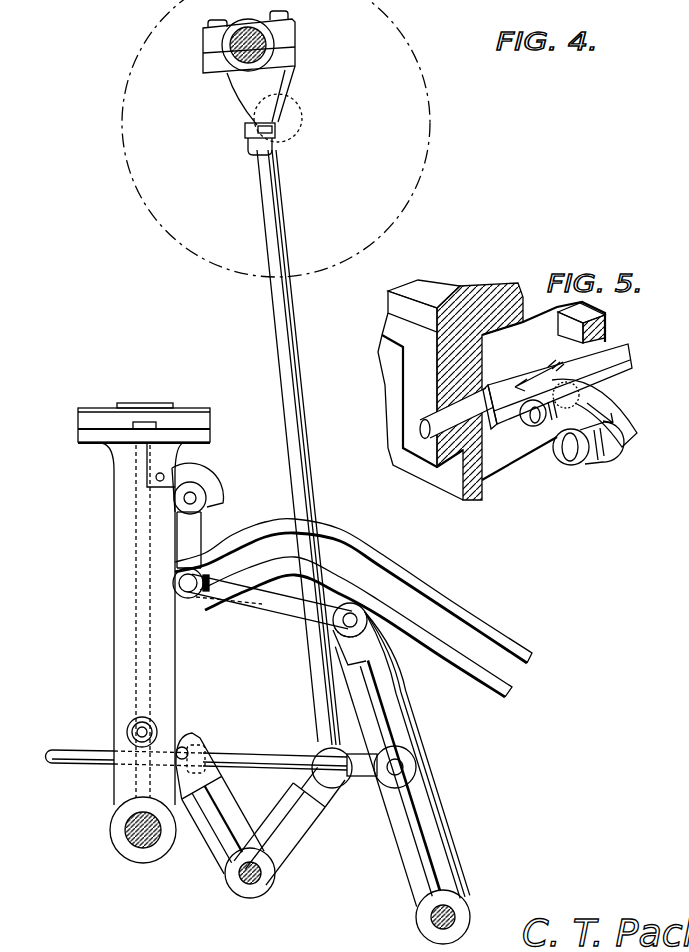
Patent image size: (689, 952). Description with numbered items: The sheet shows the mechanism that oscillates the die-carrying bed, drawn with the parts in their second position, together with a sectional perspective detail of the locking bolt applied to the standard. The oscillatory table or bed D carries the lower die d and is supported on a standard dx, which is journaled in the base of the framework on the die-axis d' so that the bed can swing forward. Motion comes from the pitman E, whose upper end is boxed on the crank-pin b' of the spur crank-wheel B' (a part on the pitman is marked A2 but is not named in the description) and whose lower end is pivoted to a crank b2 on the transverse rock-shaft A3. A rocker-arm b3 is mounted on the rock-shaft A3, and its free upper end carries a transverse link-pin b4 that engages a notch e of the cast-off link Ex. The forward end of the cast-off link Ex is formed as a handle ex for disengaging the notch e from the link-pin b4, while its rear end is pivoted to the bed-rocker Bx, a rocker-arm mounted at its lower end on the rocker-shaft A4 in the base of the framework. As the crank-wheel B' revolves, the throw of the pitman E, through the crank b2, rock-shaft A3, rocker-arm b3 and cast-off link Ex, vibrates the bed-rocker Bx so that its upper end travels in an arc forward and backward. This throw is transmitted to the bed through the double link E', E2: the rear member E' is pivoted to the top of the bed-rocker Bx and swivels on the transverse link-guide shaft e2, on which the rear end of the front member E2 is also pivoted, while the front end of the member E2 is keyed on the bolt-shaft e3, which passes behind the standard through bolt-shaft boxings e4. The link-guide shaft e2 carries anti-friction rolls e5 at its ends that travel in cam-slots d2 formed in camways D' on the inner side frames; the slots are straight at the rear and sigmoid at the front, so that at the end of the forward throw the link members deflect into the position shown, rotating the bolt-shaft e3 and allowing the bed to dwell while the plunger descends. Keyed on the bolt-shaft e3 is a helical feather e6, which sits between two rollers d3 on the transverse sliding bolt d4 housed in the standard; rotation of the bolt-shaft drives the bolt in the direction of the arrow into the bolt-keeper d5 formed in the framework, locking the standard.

In FIG. 4, the crank-pin b' is at (235, 69).
In FIG. 4, the collar A2 is at (296, 140).
In FIG. 4, the spur crank-wheel B' is at (296, 138).
In FIG. 4, the pitman E is at (298, 447).
In FIG. 4, the oscillatory table or bed D is at (136, 633).
In FIG. 4, the lower die d is at (145, 405).
In FIG. 4, the sliding bolt d4 is at (156, 478).
In FIG. 5, the sliding bolt d4 is at (527, 373).
In FIG. 4, the helical feather e6 is at (196, 480).
In FIG. 5, the helical feather e6 is at (630, 427).
In FIG. 4, the bolt-shaft e3 is at (198, 502).
In FIG. 4, the bolt-shaft boxings e4 is at (185, 514).
In FIG. 4, the front member of the double link E2 is at (192, 548).
In FIG. 4, the standard dx is at (123, 572).
In FIG. 4, the cam-slots d2 is at (535, 676).
In FIG. 4, the camways D' is at (353, 602).
In FIG. 4, the anti-friction rolls e5 is at (186, 598).
In FIG. 4, the link-guide shaft e2 is at (204, 606).
In FIG. 4, the rear member of the double link E' is at (270, 617).
In FIG. 4, the bolt-keeper d5 is at (136, 728).
In FIG. 4, the handle ex is at (52, 748).
In FIG. 4, the notch e is at (192, 744).
In FIG. 4, the link-pin b4 is at (190, 752).
In FIG. 4, the cast-off link Ex is at (292, 752).
In FIG. 4, the die-axis d' is at (141, 848).
In FIG. 4, the rocker-arm b3 is at (218, 850).
In FIG. 4, the crank b2 is at (316, 832).
In FIG. 4, the rock-shaft A3 is at (258, 880).
In FIG. 4, the bed-rocker Bx is at (432, 838).
In FIG. 4, the rocker-shaft A4 is at (458, 918).
In FIG. 5, the rollers d3 is at (608, 388).